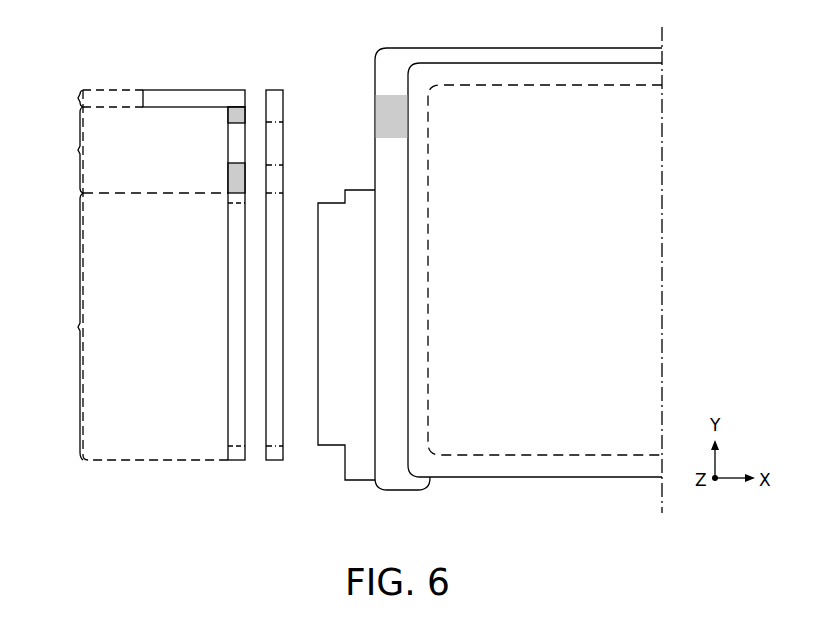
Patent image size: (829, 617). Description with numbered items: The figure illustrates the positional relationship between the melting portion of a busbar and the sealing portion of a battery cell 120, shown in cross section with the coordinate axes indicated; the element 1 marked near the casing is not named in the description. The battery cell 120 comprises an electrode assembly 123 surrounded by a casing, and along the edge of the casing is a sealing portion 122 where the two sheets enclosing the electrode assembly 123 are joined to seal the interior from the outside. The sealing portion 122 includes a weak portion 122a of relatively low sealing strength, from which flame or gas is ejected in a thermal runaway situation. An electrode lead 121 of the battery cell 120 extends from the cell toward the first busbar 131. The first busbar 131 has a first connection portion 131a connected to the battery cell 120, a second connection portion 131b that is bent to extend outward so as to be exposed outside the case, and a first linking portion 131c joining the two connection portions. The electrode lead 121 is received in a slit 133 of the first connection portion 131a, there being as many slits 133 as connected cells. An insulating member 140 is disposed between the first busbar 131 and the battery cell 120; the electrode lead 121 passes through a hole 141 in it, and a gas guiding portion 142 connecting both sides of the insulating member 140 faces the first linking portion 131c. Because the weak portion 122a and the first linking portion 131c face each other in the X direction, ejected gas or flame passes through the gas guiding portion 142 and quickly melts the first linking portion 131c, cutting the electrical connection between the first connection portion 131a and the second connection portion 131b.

The display device 1 is at (386, 60).
The battery cell 120 is at (364, 67).
The electrode lead 121 is at (332, 435).
The sealing portion 122 is at (400, 480).
The weak portion 122a is at (385, 118).
The electrode assembly 123 is at (538, 438).
The first busbar 131 is at (191, 79).
The first connection portion 131a is at (52, 326).
The second connection portion 131b is at (133, 98).
The first linking portion 131c is at (125, 150).
The slit 133 is at (228, 113).
The insulating member 140 is at (267, 295).
The hole 141 is at (275, 427).
The gas guiding portion 142 is at (274, 152).